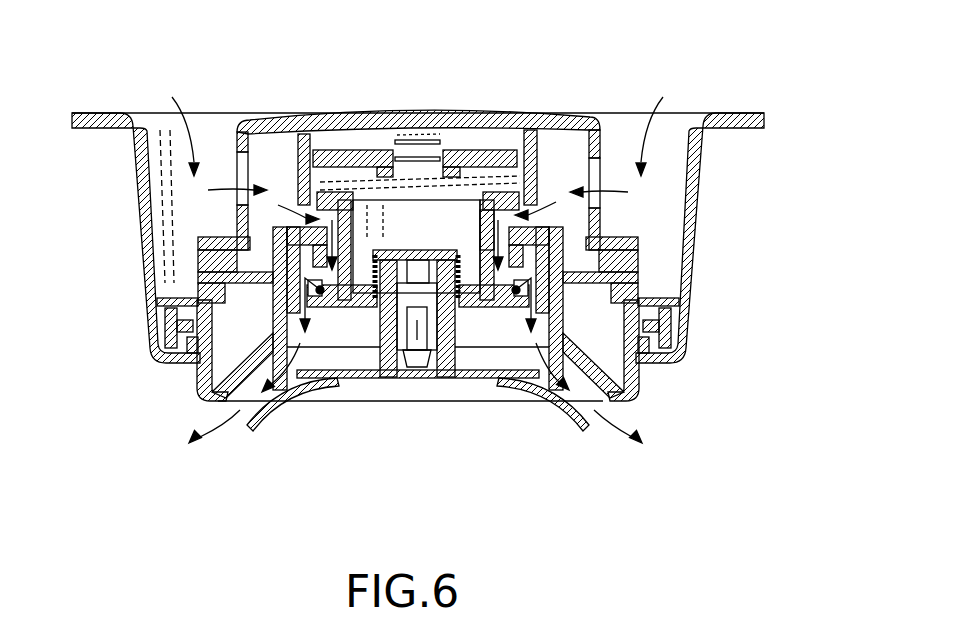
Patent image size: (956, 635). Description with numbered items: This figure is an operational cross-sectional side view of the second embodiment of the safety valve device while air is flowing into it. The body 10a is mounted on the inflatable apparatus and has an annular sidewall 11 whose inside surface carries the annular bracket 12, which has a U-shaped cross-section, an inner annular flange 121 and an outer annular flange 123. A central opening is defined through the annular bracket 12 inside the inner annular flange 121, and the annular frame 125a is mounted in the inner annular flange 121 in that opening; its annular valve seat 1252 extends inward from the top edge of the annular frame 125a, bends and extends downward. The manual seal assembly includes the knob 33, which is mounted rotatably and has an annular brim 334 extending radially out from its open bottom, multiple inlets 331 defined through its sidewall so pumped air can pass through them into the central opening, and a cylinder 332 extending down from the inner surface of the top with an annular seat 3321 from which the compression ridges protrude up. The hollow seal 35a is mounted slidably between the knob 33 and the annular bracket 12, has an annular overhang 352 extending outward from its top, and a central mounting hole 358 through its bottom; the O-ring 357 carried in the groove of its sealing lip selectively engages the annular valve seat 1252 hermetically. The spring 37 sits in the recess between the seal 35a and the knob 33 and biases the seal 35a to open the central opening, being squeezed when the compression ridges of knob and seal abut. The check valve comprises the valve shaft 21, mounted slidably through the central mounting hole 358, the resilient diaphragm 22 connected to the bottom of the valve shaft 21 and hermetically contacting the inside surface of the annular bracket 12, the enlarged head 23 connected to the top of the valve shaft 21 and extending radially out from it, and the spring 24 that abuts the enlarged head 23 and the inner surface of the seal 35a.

The body 10a is at (138, 333).
The annular sidewall 11 is at (140, 212).
The annular bracket 12 is at (597, 393).
The inner annular flange 121 is at (563, 235).
The outer annular flange 123 is at (632, 288).
The annular valve seat 1252 is at (500, 377).
The annular frame 125a is at (545, 298).
The valve shaft 21 is at (482, 340).
The diaphragm 22 is at (260, 428).
The enlarged head 23 is at (418, 250).
The spring 24 is at (460, 250).
The knob 33 is at (237, 150).
The inlets 331 is at (238, 160).
The cylinder 332 is at (303, 187).
The annular seat 3321 is at (550, 207).
The annular brim 334 is at (617, 257).
The seal 35a is at (528, 215).
The annular overhang 352 is at (320, 152).
The O-ring 357 is at (340, 355).
The central mounting hole 358 is at (390, 330).
The spring 37 is at (423, 153).